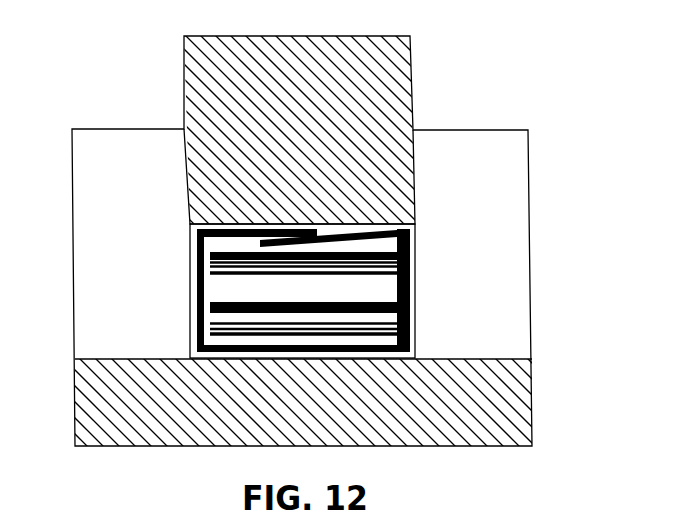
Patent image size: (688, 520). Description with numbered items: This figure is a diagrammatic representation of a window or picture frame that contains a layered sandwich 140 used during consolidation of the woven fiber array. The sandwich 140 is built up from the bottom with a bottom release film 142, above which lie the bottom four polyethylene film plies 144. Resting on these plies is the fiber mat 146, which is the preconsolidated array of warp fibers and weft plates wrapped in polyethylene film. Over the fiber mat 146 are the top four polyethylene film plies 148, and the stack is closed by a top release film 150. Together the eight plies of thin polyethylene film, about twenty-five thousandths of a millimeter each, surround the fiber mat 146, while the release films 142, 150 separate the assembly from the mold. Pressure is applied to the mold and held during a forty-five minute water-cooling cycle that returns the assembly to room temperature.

The sandwich 140 is at (509, 216).
The bottom release film 142 is at (375, 342).
The bottom four polyethylene film plies 144 is at (207, 329).
The fiber mat 146 is at (210, 305).
The top four polyethylene film plies 148 is at (207, 272).
The top release film 150 is at (214, 252).